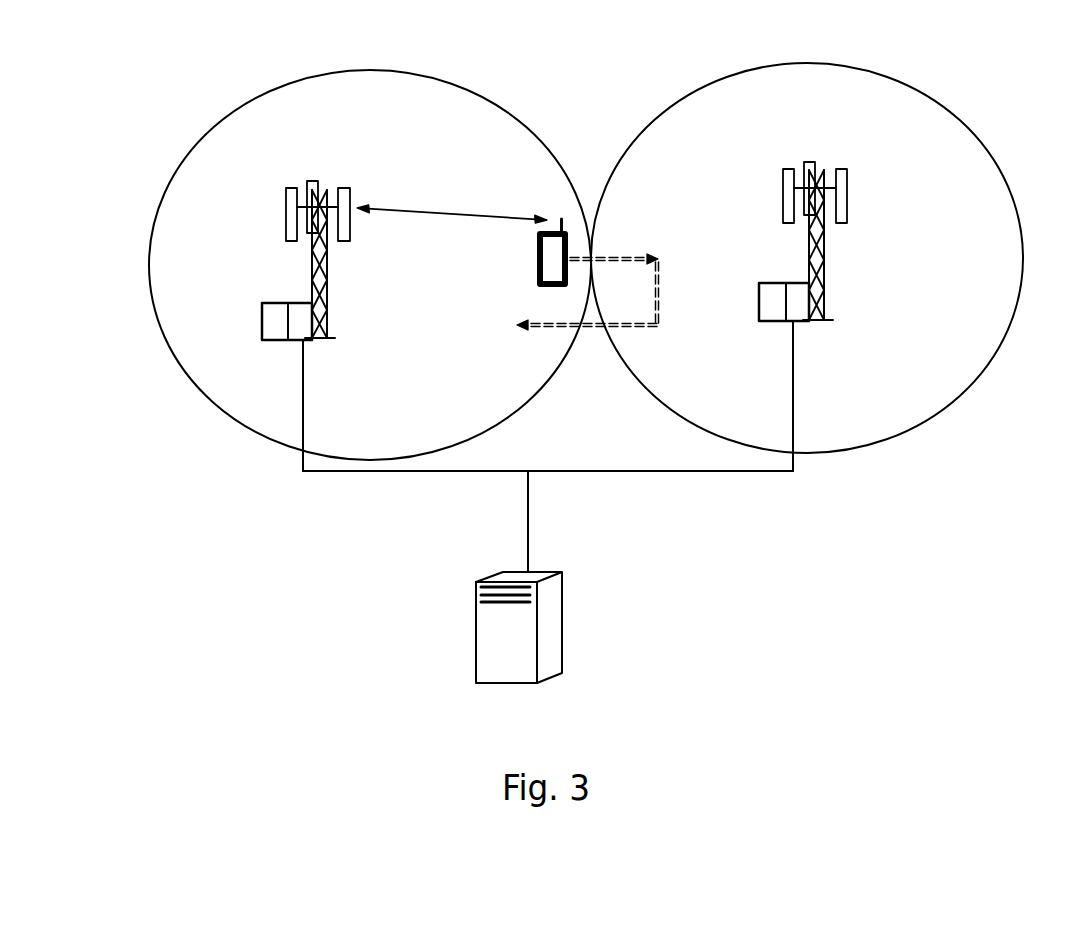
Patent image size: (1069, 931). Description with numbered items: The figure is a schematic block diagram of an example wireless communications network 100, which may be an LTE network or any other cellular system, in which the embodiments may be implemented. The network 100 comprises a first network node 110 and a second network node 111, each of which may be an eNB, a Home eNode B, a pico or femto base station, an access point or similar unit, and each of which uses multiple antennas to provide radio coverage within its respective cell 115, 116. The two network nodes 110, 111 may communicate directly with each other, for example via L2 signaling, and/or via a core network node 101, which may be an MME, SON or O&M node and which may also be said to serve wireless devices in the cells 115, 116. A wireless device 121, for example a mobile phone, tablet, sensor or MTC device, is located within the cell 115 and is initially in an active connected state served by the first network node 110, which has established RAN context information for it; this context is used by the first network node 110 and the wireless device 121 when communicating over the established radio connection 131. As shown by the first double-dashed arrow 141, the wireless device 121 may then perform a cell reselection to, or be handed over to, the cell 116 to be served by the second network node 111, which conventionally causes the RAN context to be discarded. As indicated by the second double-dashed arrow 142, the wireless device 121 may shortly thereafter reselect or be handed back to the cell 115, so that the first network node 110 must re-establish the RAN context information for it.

The wireless communications network 100 is at (845, 500).
The core network node 101 is at (562, 660).
The first network node 110 is at (348, 190).
The second network node 111 is at (821, 265).
The cell 115 is at (173, 353).
The cell 116 is at (997, 345).
The wireless device 121 is at (537, 250).
The radio connection 131 is at (412, 210).
The first double-dashed arrow 141 is at (617, 257).
The second double-dashed arrow 142 is at (642, 327).